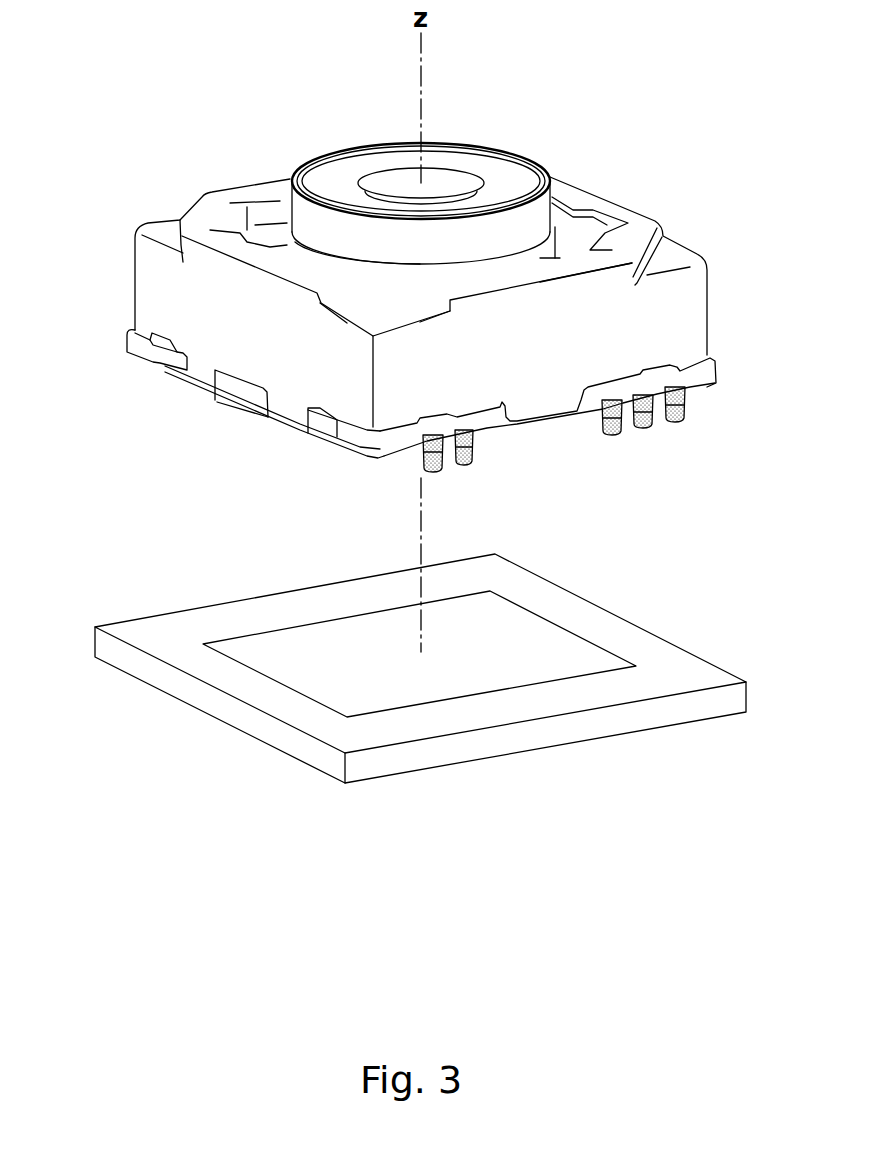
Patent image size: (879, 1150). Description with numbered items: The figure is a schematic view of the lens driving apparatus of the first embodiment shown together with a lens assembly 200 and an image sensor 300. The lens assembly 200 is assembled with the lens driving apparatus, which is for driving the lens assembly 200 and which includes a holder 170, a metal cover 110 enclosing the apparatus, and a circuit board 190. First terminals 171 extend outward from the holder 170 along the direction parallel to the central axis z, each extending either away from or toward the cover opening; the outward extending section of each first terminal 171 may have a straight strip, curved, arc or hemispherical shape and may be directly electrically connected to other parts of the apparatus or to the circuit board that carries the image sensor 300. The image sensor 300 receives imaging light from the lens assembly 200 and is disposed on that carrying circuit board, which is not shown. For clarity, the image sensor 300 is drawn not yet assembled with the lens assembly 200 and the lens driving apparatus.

The metal cover 110 is at (155, 282).
The holder 170 is at (240, 388).
The first terminals 171 is at (690, 413).
The circuit board 190 is at (250, 410).
The lens assembly 200 is at (345, 170).
The image sensor 300 is at (237, 713).